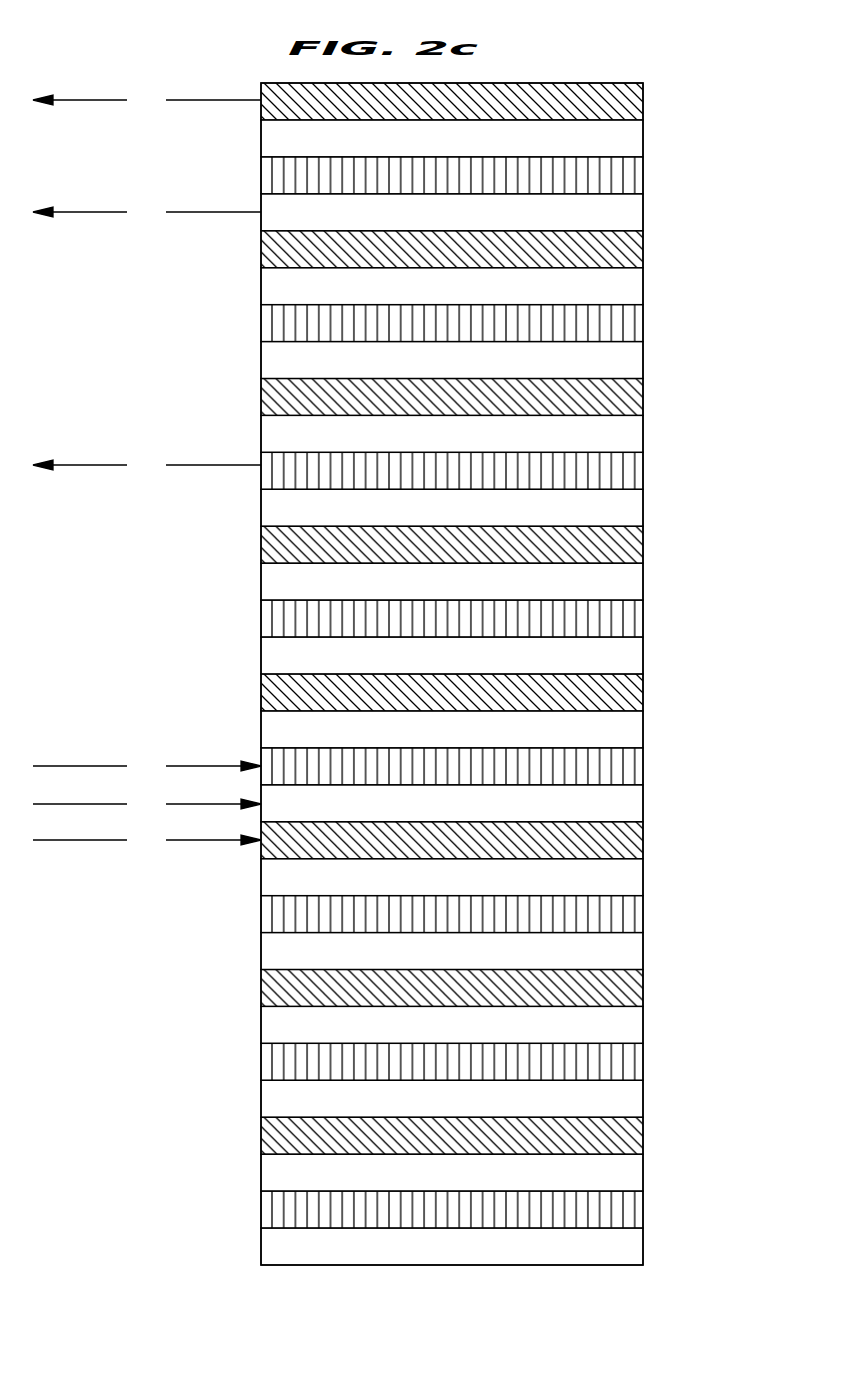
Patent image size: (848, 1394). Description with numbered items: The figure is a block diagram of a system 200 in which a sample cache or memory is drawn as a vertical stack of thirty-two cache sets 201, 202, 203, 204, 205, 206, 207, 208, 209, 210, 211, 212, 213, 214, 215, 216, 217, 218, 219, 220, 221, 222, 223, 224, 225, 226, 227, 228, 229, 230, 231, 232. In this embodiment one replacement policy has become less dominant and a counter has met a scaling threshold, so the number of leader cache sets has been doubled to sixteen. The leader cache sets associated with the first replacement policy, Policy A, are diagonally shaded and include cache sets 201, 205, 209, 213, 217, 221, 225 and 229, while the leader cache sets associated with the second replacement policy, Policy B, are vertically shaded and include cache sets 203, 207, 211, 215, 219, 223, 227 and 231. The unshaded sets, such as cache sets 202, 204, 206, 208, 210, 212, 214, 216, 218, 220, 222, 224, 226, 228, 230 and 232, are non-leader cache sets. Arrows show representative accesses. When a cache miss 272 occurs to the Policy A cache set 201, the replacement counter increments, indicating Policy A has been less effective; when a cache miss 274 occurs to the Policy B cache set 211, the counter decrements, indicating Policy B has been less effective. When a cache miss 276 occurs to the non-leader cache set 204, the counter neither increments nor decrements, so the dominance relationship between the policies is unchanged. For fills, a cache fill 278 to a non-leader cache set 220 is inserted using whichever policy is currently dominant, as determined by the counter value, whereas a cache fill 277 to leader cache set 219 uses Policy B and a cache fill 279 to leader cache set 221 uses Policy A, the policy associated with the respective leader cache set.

The system 200 is at (724, 48).
The cache set 201 is at (500, 101).
The cache set 202 is at (500, 138).
The cache set 203 is at (500, 175).
The cache set 204 is at (500, 212).
The cache set 205 is at (500, 249).
The cache set 206 is at (500, 286).
The cache set 207 is at (500, 323).
The cache set 208 is at (500, 360).
The cache set 209 is at (500, 397).
The cache set 210 is at (500, 433).
The cache set 211 is at (500, 470).
The cache set 212 is at (500, 507).
The cache set 213 is at (500, 544).
The cache set 214 is at (500, 581).
The cache set 215 is at (500, 618).
The cache set 216 is at (500, 655).
The cache set 217 is at (500, 692).
The cache set 218 is at (500, 729).
The cache set 219 is at (500, 766).
The cache set 220 is at (500, 803).
The cache set 221 is at (500, 840).
The cache set 222 is at (500, 877).
The cache set 223 is at (500, 914).
The cache set 224 is at (500, 951).
The cache set 225 is at (500, 988).
The cache set 226 is at (500, 1024).
The cache set 227 is at (500, 1061).
The cache set 228 is at (500, 1098).
The cache set 229 is at (500, 1135).
The cache set 230 is at (500, 1172).
The cache set 231 is at (500, 1209).
The cache set 232 is at (500, 1246).
The cache miss 272 is at (129, 110).
The cache miss 274 is at (129, 474).
The cache miss 276 is at (129, 222).
The cache fill 277 is at (129, 776).
The cache fill 278 is at (129, 814).
The cache fill 279 is at (129, 850).